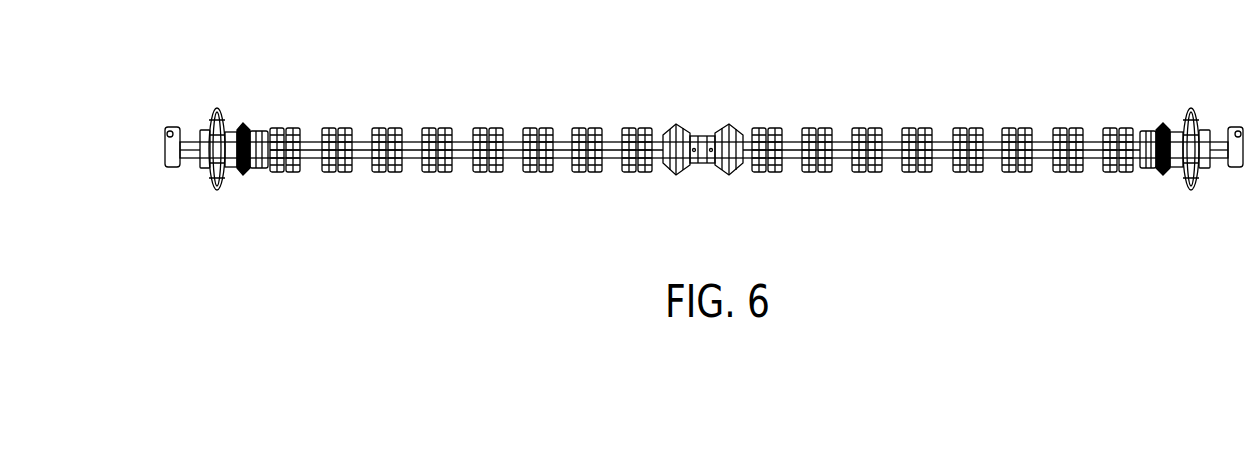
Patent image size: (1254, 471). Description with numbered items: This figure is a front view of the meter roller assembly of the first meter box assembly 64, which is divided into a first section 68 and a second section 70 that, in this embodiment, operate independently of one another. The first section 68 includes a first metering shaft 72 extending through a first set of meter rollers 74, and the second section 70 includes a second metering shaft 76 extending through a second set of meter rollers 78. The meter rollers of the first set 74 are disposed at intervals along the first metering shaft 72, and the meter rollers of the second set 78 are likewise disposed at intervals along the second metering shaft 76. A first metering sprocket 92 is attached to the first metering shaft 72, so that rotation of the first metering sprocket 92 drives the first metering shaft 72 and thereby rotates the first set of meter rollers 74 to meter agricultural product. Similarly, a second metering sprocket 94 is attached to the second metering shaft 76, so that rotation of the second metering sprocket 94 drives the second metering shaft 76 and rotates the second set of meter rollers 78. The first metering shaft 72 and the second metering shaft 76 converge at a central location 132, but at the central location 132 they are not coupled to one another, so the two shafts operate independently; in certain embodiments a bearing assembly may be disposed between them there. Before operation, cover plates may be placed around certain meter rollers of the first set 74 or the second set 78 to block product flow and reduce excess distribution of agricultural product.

The first meter box assembly 64 is at (163, 74).
The first section 68 is at (1015, 256).
The second section 70 is at (432, 260).
The first metering shaft 72 is at (889, 152).
The first set of meter rollers 74 is at (1055, 166).
The second metering shaft 76 is at (517, 152).
The second set of meter rollers 78 is at (374, 166).
The first metering sprocket 92 is at (1197, 176).
The second metering sprocket 94 is at (214, 172).
The central location 132 is at (700, 167).